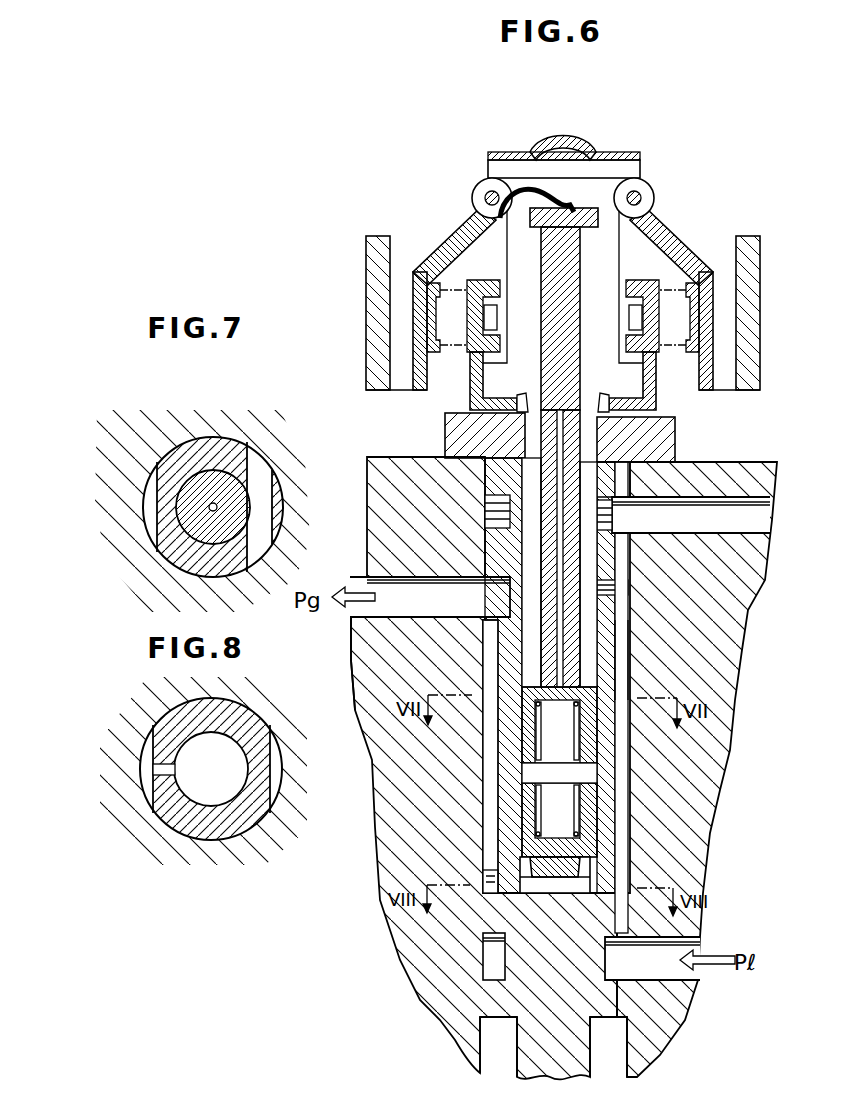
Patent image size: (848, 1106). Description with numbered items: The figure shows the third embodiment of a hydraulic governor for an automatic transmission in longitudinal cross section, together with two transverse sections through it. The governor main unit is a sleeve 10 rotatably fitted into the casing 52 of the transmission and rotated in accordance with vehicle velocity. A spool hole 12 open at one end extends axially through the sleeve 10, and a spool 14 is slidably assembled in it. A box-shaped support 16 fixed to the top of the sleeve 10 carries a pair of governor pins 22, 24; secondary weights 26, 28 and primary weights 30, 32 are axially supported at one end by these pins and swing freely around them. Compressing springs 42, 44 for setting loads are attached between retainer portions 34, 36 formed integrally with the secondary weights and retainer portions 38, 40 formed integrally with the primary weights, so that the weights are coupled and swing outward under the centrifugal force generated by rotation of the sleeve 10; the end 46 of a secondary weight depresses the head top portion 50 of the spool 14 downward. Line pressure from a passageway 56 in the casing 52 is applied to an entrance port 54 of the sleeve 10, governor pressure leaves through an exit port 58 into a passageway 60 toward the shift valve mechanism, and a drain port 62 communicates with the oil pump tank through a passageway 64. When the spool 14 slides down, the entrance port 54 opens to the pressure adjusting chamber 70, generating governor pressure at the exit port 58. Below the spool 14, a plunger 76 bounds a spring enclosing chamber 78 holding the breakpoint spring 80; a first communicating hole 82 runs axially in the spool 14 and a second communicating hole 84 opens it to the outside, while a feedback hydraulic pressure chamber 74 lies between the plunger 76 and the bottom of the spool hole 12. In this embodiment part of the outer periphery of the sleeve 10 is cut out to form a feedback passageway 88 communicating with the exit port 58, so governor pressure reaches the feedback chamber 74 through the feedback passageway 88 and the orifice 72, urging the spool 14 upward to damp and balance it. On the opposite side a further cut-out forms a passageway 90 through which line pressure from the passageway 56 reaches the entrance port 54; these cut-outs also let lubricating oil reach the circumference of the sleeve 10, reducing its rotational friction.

In FIG. 6, the sleeve 10 is at (583, 1057).
In FIG. 7, the sleeve 10 is at (165, 458).
In FIG. 8, the sleeve 10 is at (155, 725).
In FIG. 6, the spool hole 12 is at (640, 625).
In FIG. 6, the spool 14 is at (598, 700).
In FIG. 7, the spool 14 is at (220, 470).
In FIG. 6, the support 16 is at (485, 402).
In FIG. 6, the governor pin 22 is at (478, 190).
In FIG. 6, the governor pin 24 is at (648, 192).
In FIG. 6, the secondary weight 26 is at (452, 240).
In FIG. 6, the secondary weight 28 is at (680, 248).
In FIG. 6, the primary weight 30 is at (366, 345).
In FIG. 6, the primary weight 32 is at (760, 345).
In FIG. 6, the retainer portion 34 is at (438, 300).
In FIG. 6, the retainer portion 36 is at (688, 298).
In FIG. 6, the retainer portion 38 is at (465, 345).
In FIG. 6, the retainer portion 40 is at (680, 345).
In FIG. 6, the compressing spring 42 is at (432, 360).
In FIG. 6, the compressing spring 44 is at (695, 362).
In FIG. 6, the end of secondary weight 46 is at (532, 188).
In FIG. 6, the head top portion 50 is at (533, 215).
In FIG. 6, the casing 52 is at (412, 945).
In FIG. 6, the entrance port 54 is at (612, 735).
In FIG. 7, the entrance port 54 is at (258, 555).
In FIG. 6, the passageway 56 is at (692, 980).
In FIG. 6, the exit port 58 is at (498, 600).
In FIG. 6, the passageway 60 is at (355, 612).
In FIG. 6, the drain port 62 is at (633, 490).
In FIG. 6, the passageway 64 is at (744, 503).
In FIG. 6, the pressure adjusting chamber 70 is at (630, 665).
In FIG. 6, the orifice 72 is at (490, 875).
In FIG. 6, the feedback hydraulic pressure chamber 74 is at (585, 895).
In FIG. 6, the plunger 76 is at (600, 868).
In FIG. 6, the spring enclosing chamber 78 is at (585, 780).
In FIG. 6, the spring 80 is at (598, 825).
In FIG. 6, the first communicating hole 82 is at (605, 515).
In FIG. 7, the first communicating hole 82 is at (209, 508).
In FIG. 6, the second communicating hole 84 is at (575, 440).
In FIG. 6, the feedback passageway 88 is at (487, 680).
In FIG. 7, the feedback passageway 88 is at (160, 525).
In FIG. 8, the feedback passageway 88 is at (152, 783).
In FIG. 6, the passageway 90 is at (625, 760).
In FIG. 7, the passageway 90 is at (268, 495).
In FIG. 8, the passageway 90 is at (278, 770).